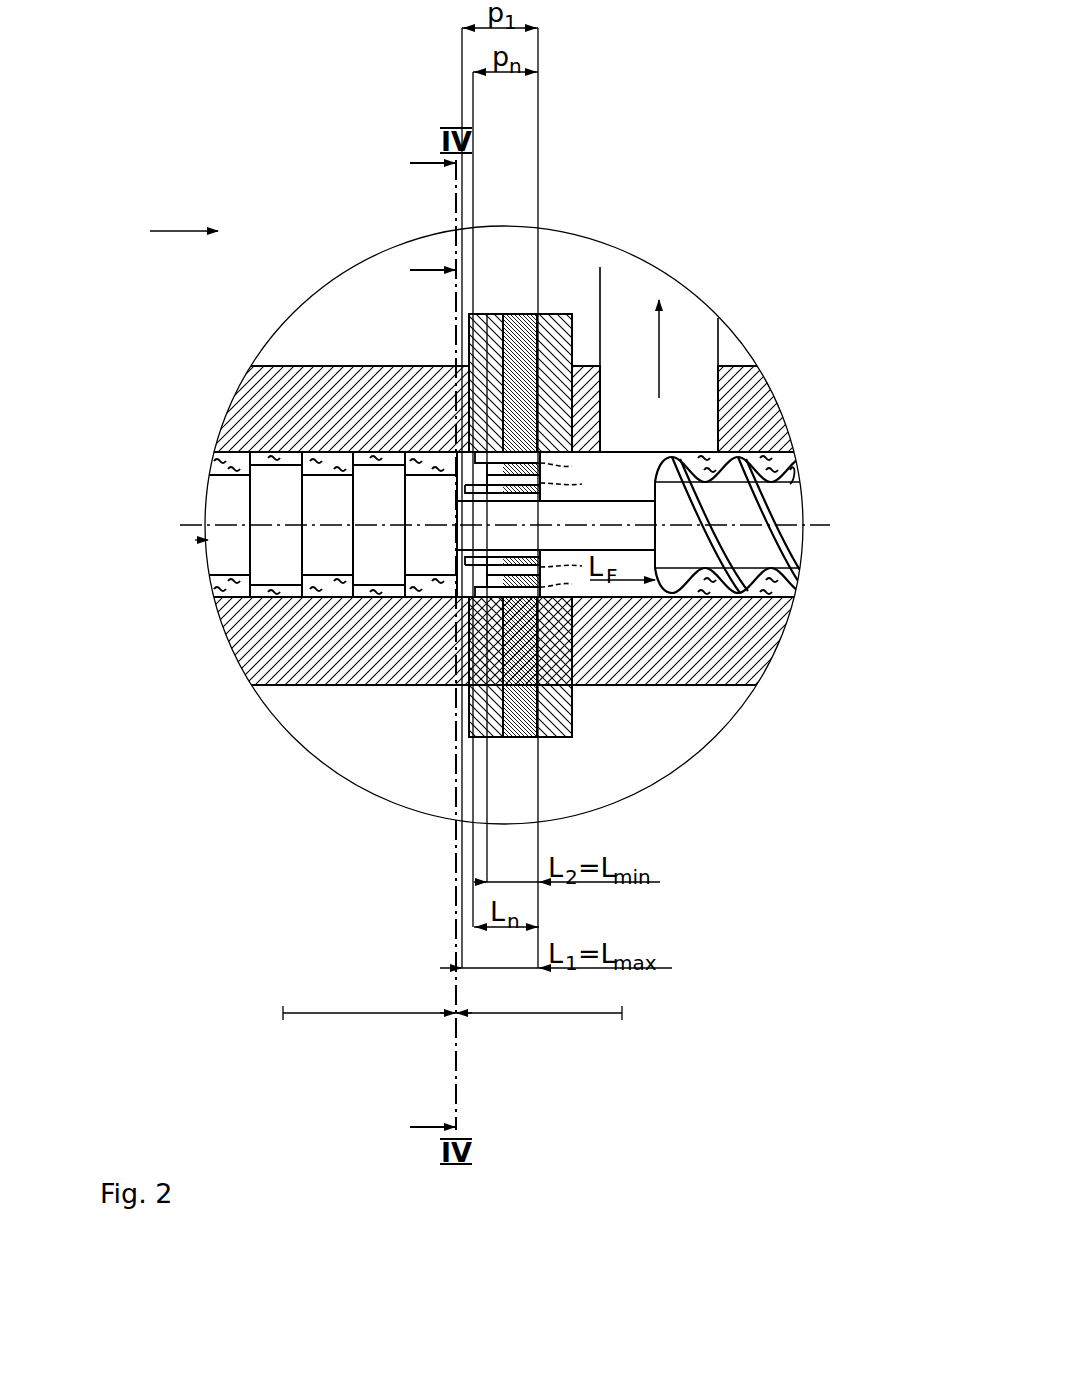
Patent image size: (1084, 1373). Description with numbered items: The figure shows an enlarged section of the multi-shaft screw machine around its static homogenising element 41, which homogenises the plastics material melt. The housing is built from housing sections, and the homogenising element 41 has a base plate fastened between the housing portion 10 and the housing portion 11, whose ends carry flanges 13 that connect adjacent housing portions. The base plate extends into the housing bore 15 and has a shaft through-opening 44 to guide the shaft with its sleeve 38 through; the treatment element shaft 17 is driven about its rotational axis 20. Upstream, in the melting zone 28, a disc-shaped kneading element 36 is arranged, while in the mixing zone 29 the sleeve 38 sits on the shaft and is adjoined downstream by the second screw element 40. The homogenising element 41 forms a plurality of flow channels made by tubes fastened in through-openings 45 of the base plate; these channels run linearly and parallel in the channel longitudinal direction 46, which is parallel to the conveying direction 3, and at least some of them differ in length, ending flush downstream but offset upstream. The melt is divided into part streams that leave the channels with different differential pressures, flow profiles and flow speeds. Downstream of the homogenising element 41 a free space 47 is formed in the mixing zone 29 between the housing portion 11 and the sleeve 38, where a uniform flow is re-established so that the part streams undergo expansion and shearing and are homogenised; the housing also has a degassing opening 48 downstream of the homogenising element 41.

The conveying direction 3 is at (183, 231).
The housing portion 10 is at (236, 410).
The housing portion 11 is at (772, 408).
The flange 13 is at (487, 305).
The housing bore 15 is at (780, 586).
The treatment element shaft 17 is at (196, 540).
The rotational axis 20 is at (233, 525).
The melting zone 28 is at (369, 1002).
The mixing zone 29 is at (539, 1002).
The kneading element 36 is at (214, 486).
The sleeve 38 is at (645, 512).
The second screw element 40 is at (760, 533).
The homogenising element 41 is at (524, 306).
The shaft through-opening 44 is at (462, 560).
The through-opening 45 is at (545, 600).
The channel longitudinal direction 46 is at (478, 456).
The free space 47 is at (642, 494).
The degassing opening 48 is at (690, 435).